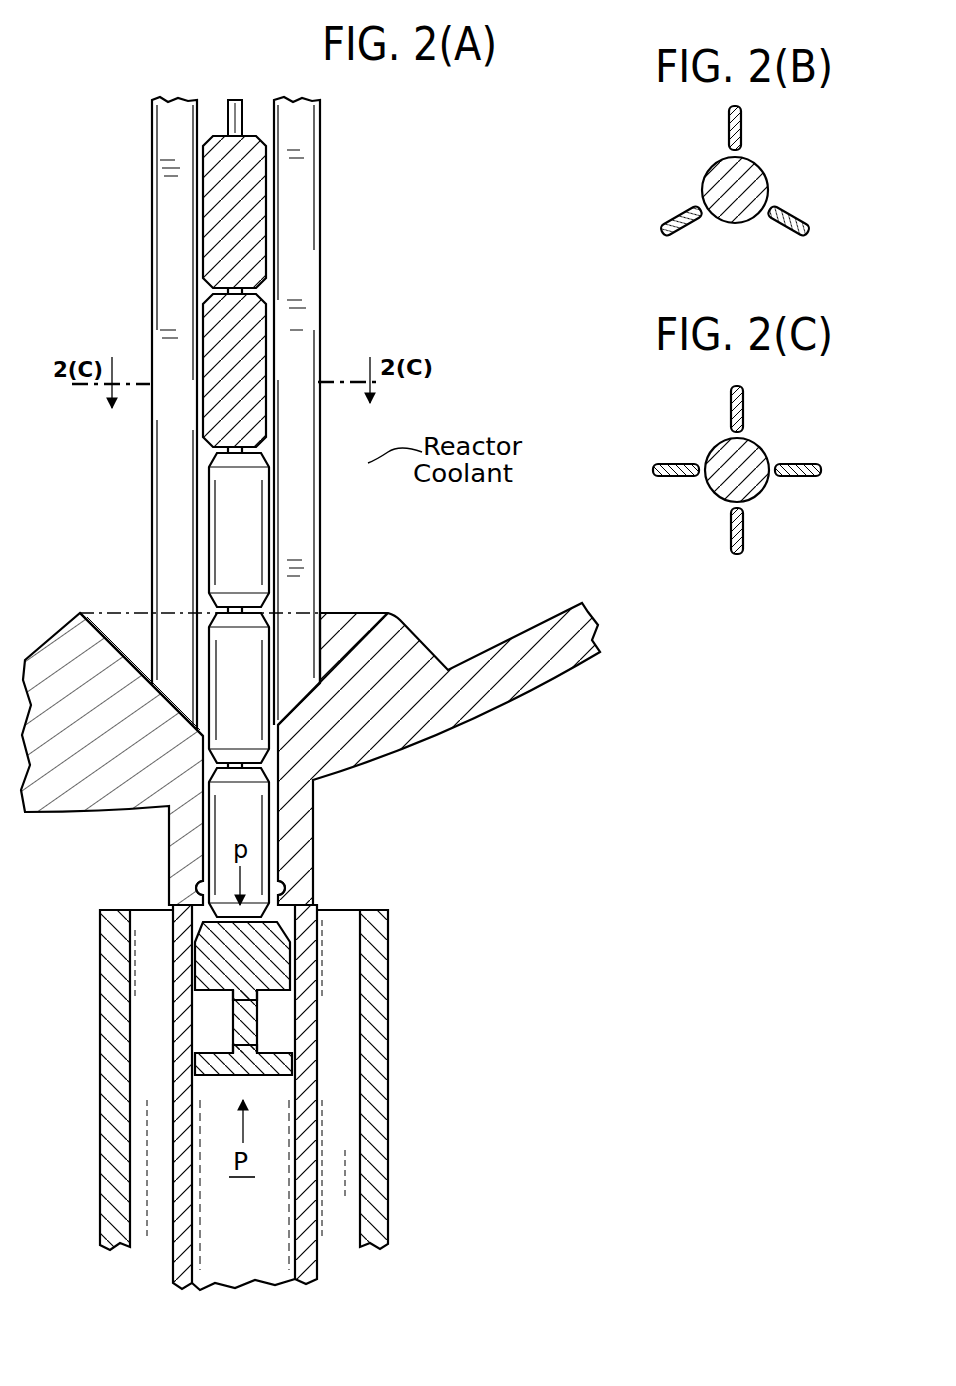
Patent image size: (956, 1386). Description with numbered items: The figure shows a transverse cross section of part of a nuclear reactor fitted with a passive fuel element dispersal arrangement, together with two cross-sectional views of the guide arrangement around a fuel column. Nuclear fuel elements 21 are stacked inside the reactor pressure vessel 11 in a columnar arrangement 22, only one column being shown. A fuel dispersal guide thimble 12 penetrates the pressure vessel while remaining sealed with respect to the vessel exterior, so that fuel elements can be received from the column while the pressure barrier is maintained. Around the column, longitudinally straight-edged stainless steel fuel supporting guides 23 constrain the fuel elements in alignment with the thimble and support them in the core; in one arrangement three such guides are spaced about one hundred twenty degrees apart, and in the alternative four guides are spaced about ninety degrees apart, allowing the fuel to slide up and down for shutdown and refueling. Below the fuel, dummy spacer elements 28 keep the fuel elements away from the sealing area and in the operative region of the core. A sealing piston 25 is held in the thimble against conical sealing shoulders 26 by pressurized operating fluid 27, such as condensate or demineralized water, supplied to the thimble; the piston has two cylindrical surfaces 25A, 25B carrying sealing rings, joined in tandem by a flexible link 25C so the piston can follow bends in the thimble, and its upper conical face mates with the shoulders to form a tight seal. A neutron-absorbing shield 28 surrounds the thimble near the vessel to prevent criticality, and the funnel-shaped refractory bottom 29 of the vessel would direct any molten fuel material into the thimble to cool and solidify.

In FIG. 2A, the reactor pressure vessel 11 is at (560, 665).
In FIG. 2A, the dispersal guide thimble 12 is at (322, 1150).
In FIG. 2A, the nuclear fuel elements 21 is at (243, 323).
In FIG. 2B, the nuclear fuel elements 21 is at (765, 178).
In FIG. 2C, the nuclear fuel elements 21 is at (765, 450).
In FIG. 2A, the columnar arrangement 22 is at (252, 130).
In FIG. 2A, the fuel supporting guide 23 is at (235, 118).
In FIG. 2B, the fuel supporting guide 23 is at (683, 217).
In FIG. 2C, the fuel supporting guide 23 is at (732, 405).
In FIG. 2A, the sealing piston 25 is at (382, 1006).
In FIG. 2A, the cylindrical surface 25A is at (195, 958).
In FIG. 2A, the cylindrical surface 25B is at (195, 1065).
In FIG. 2A, the flexible link 25C is at (237, 1027).
In FIG. 2A, the conical sealing shoulders 26 is at (198, 888).
In FIG. 2A, the pressurized fluid 27 is at (225, 1235).
In FIG. 2A, the dummy spacer elements 28 is at (253, 642).
In FIG. 2A, the refractory bottom 29 is at (112, 632).